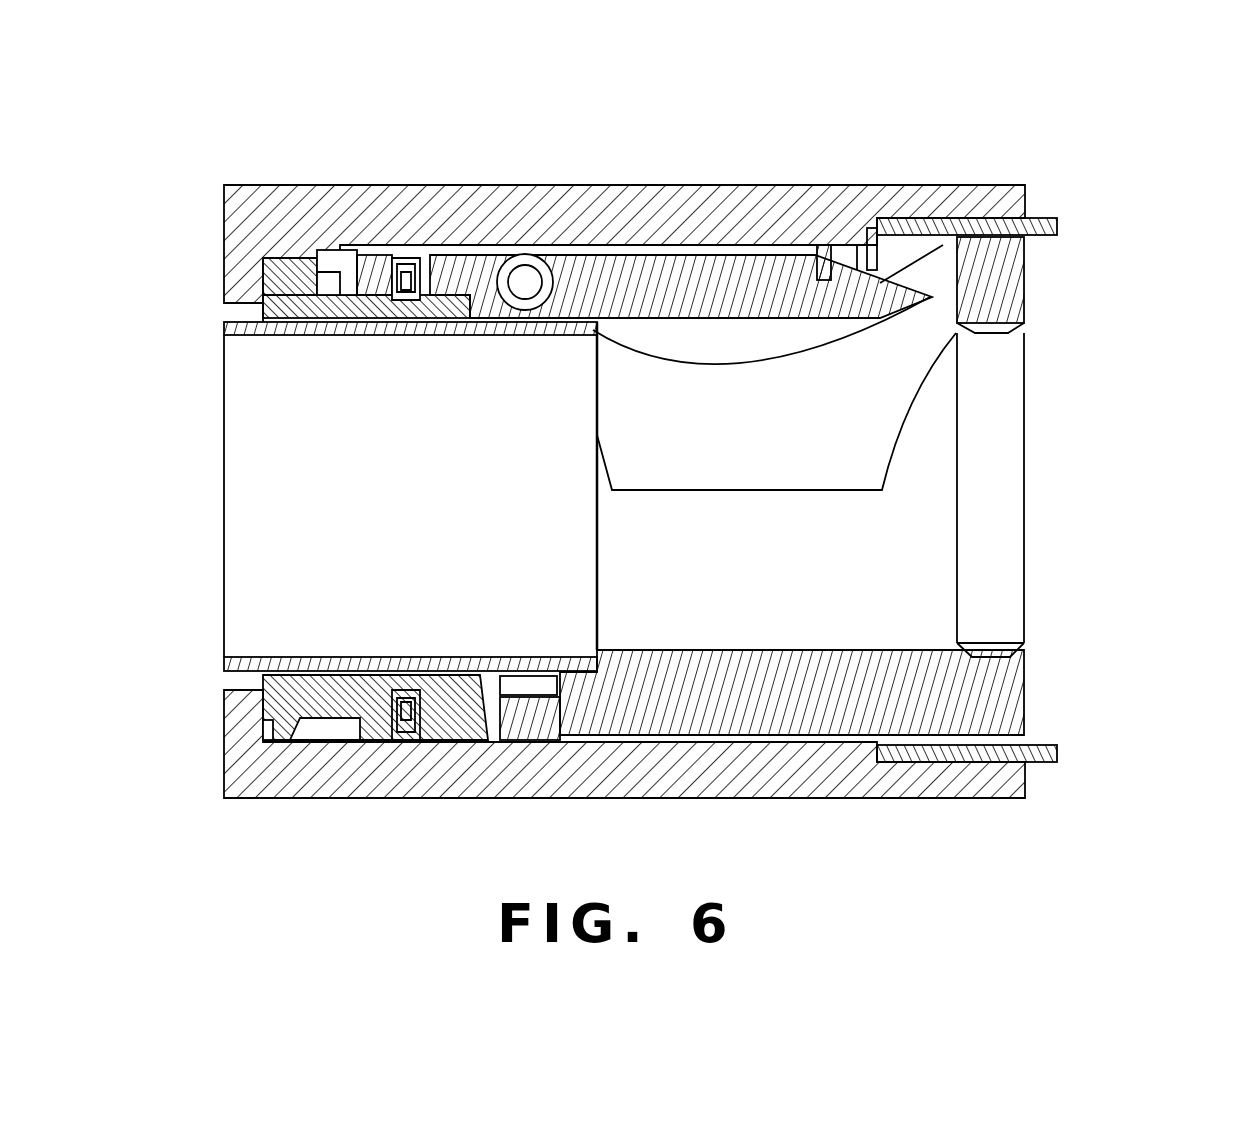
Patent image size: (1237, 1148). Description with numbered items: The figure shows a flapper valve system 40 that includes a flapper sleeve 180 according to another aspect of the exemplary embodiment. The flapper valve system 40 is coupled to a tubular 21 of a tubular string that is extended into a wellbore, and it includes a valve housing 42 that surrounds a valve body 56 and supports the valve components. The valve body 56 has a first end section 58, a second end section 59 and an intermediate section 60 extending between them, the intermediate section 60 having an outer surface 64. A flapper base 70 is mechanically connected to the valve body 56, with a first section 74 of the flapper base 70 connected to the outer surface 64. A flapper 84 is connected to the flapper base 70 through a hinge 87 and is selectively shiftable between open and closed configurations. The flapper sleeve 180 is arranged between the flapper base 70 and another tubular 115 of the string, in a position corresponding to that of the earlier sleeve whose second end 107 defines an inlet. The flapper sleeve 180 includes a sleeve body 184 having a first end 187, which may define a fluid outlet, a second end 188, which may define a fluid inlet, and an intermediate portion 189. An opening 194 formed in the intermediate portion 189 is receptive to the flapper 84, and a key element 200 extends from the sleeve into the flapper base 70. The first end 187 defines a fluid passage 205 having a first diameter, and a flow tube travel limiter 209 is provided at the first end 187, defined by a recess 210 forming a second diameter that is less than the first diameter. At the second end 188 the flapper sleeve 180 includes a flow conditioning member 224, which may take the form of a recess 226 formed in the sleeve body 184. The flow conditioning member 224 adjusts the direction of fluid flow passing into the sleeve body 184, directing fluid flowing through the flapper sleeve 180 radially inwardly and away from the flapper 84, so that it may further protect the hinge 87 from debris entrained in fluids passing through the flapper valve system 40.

The flapper valve system 40 is at (325, 140).
The valve housing 42 is at (665, 183).
The tubular 21 is at (240, 303).
The valve body 56 is at (280, 262).
The first end section 58 is at (258, 312).
The intermediate section 60 is at (358, 302).
The outer surface 64 is at (360, 265).
The flapper base 70 is at (452, 250).
The first section 74 is at (468, 240).
The hinge 87 is at (530, 258).
The flapper 84 is at (818, 250).
The opening 194 is at (930, 272).
The tubular 115 is at (1045, 213).
The second end 107 is at (1025, 260).
The second end 188 is at (1025, 297).
The recess 226 is at (985, 330).
The flow conditioning member 224 is at (978, 340).
The second end section 59 is at (740, 357).
The flow tube travel limiter 209 is at (595, 652).
The recess 210 is at (590, 665).
The fluid passage 205 is at (548, 663).
The flapper sleeve 180 is at (1050, 712).
The sleeve body 184 is at (720, 730).
The intermediate portion 189 is at (675, 700).
The key element 200 is at (490, 735).
The first end 187 is at (540, 740).